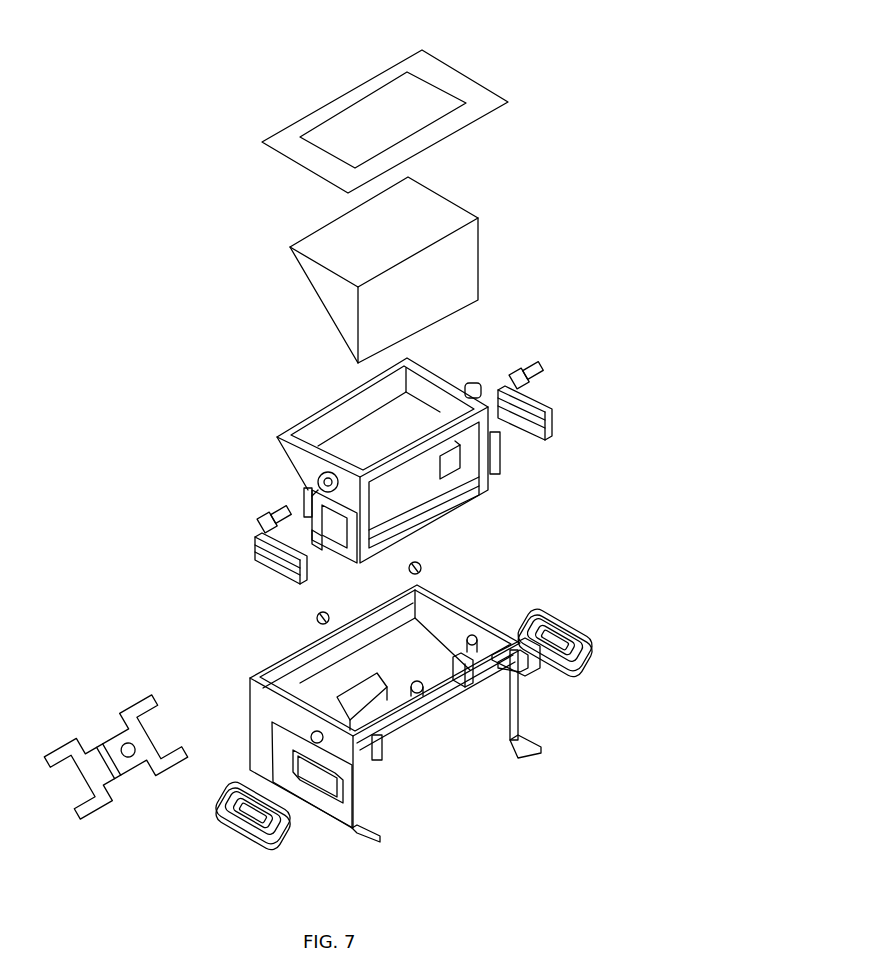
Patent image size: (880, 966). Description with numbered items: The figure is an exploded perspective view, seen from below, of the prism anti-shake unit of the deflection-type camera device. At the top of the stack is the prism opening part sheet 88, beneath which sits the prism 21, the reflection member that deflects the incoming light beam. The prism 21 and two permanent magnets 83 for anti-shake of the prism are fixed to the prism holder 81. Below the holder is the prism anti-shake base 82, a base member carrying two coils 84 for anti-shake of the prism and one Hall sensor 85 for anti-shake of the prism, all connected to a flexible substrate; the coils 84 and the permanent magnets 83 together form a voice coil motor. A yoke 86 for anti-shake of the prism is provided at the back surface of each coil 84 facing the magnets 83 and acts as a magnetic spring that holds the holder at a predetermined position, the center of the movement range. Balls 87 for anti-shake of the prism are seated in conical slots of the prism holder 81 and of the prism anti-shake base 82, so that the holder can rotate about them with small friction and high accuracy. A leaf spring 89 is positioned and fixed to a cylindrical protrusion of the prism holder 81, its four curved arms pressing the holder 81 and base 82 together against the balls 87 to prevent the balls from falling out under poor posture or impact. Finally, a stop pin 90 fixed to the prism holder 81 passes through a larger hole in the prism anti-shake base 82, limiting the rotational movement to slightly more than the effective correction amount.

The prism 21 is at (417, 218).
The prism holder 81 is at (363, 440).
The prism anti-shake base 82 is at (442, 710).
The permanent magnet for anti-shake of the prism 83 is at (256, 560).
The coil for anti-shake of the prism 84 is at (560, 620).
The Hall sensor for anti-shake of the prism 85 is at (555, 670).
The yoke for anti-shake of the prism 86 is at (252, 833).
The ball for anti-shake of the prism 87 is at (407, 575).
The prism opening part sheet 88 is at (437, 77).
The leaf spring 89 is at (110, 732).
The stop pin 90 is at (272, 510).